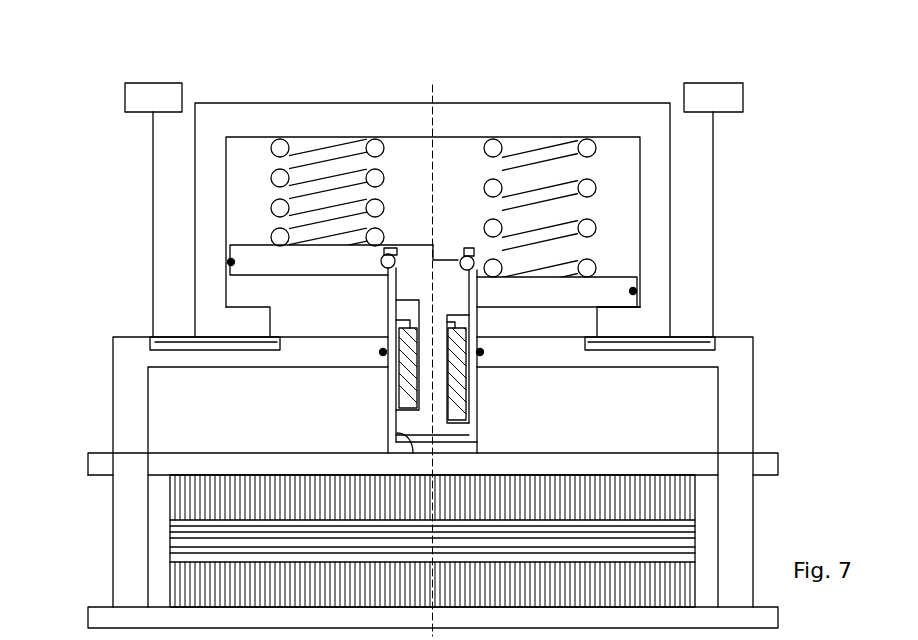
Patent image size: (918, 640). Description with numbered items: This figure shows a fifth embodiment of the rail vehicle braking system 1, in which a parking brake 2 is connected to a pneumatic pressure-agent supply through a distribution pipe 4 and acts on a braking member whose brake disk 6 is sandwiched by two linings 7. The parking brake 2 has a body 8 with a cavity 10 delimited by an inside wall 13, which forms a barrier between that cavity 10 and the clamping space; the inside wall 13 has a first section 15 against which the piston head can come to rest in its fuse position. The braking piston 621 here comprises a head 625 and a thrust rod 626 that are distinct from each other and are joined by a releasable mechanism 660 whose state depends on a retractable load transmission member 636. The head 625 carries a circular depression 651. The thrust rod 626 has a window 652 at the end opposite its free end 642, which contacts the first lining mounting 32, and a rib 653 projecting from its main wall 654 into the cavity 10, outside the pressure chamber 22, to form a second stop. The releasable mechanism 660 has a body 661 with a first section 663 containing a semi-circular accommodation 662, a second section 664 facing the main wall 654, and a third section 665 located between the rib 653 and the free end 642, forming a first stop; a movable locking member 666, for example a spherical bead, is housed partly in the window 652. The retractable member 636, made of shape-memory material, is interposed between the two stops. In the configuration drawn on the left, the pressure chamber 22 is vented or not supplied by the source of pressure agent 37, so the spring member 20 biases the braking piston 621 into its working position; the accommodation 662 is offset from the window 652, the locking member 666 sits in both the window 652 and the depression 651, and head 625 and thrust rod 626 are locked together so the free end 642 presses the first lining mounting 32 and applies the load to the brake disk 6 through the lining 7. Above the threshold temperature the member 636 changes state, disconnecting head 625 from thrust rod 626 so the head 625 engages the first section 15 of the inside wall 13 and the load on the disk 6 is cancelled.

The rail vehicle braking system 1 is at (98, 191).
The parking brake 2 is at (120, 310).
The distribution pipe 4 is at (153, 160).
The brake disk 6 is at (193, 543).
The lining 7 is at (193, 498).
The body 8 is at (265, 113).
The cavity 10 is at (263, 177).
The inside wall 13 is at (625, 328).
The first section of the inside wall 15 is at (625, 308).
The spring member 20 is at (332, 160).
The pressure chamber 22 is at (283, 322).
The first lining mounting 32 is at (180, 465).
The source of pressure agent 37 is at (125, 100).
The braking piston 621 is at (402, 226).
The head 625 is at (253, 268).
The thrust rod 626 is at (389, 423).
The retractable load transmission member 636 is at (403, 385).
The free end 642 is at (397, 433).
The circular depression 651 is at (482, 290).
The window 652 is at (377, 273).
The rib 653 is at (389, 323).
The main wall 654 is at (389, 375).
The releasable mechanism 660 is at (449, 238).
The body of the releasable mechanism 661 is at (426, 247).
The accommodation 662 is at (421, 247).
The first section 663 is at (470, 248).
The second section 664 is at (463, 373).
The third section 665 is at (457, 427).
The movable locking member 666 is at (380, 261).